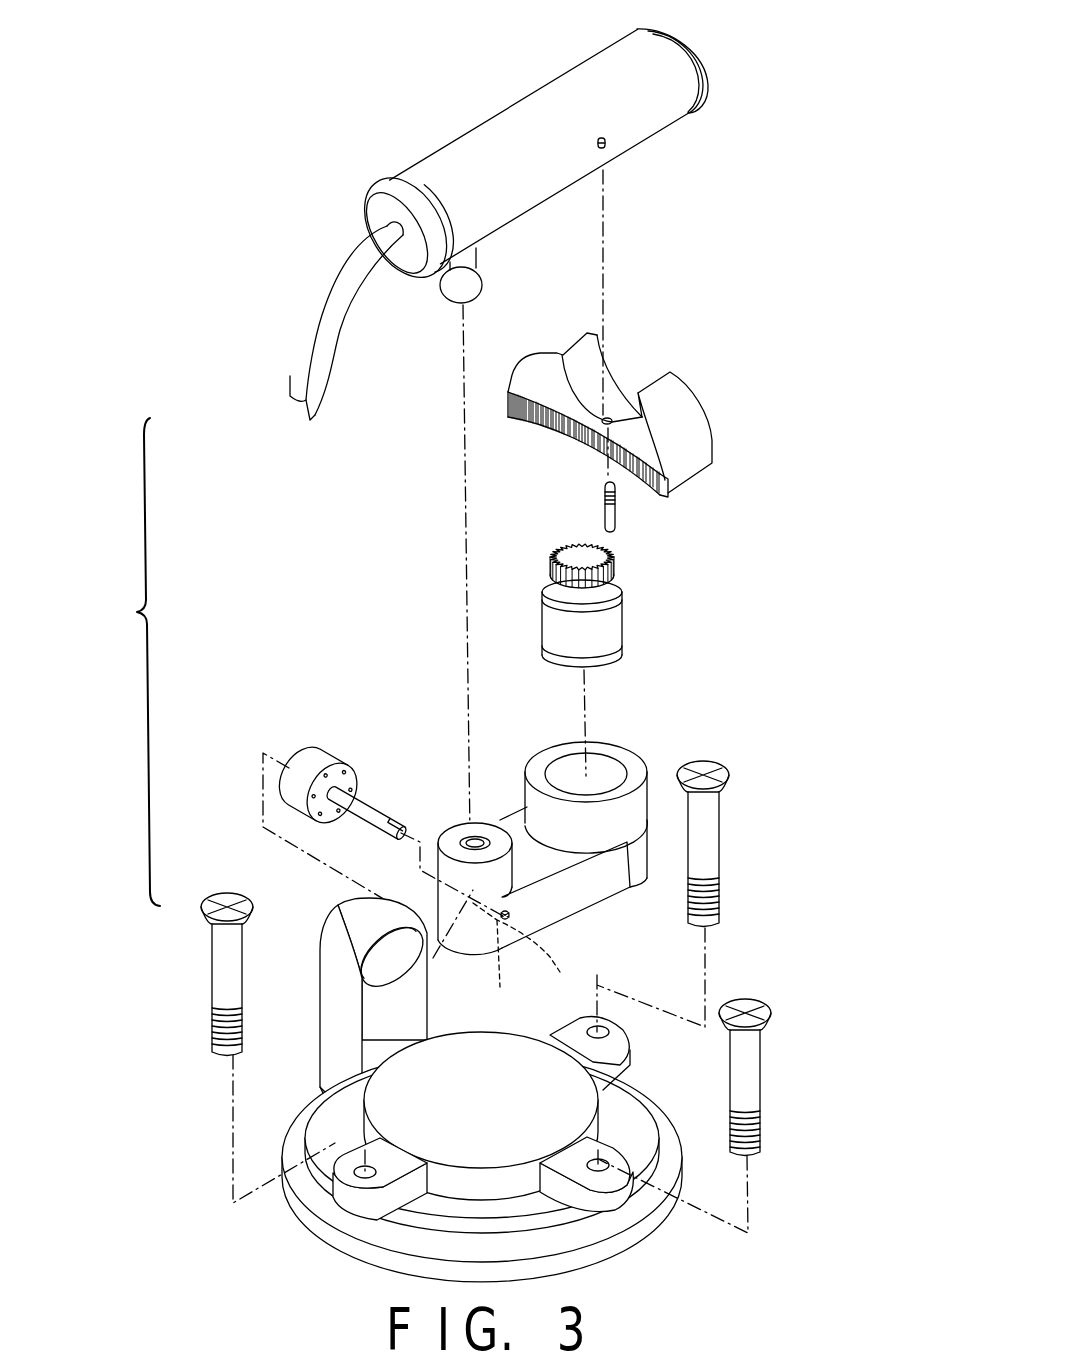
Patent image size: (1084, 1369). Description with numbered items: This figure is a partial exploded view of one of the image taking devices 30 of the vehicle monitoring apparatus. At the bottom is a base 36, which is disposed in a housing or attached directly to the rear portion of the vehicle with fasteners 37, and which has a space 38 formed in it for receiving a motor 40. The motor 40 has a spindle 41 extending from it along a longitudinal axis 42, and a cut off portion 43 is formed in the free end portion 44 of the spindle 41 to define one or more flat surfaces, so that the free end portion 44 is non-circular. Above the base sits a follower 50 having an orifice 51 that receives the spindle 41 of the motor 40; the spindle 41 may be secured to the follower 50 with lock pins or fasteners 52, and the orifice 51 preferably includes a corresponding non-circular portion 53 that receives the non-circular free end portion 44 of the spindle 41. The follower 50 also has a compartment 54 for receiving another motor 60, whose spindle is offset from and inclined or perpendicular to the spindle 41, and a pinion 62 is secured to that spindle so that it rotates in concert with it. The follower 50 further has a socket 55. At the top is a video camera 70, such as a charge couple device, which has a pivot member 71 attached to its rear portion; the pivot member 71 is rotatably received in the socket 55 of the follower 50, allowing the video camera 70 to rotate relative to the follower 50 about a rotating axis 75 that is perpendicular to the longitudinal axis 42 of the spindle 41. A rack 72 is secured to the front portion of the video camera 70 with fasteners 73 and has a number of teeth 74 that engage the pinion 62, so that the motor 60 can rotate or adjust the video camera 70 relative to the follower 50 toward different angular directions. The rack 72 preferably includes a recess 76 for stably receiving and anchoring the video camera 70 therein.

The image taking device 30 is at (267, 458).
The base 36 is at (413, 1267).
The fasteners 37 is at (747, 1000).
The space 38 is at (380, 960).
The motor 40 is at (313, 753).
The spindle 41 is at (373, 807).
The longitudinal axis 42 is at (265, 757).
The cut off portion 43 is at (390, 837).
The free end portion 44 is at (375, 829).
The follower 50 is at (600, 898).
The orifice 51 is at (508, 946).
The fasteners 52 is at (433, 957).
The non-circular portion 53 is at (503, 963).
The compartment 54 is at (607, 770).
The socket 55 is at (467, 840).
The motor 60 is at (608, 630).
The pinion 62 is at (600, 560).
The video camera 70 is at (513, 117).
The pivot member 71 is at (452, 292).
The rack 72 is at (700, 427).
The fasteners 73 is at (613, 510).
The teeth 74 is at (567, 430).
The rotating axis 75 is at (465, 400).
The recess 76 is at (630, 383).